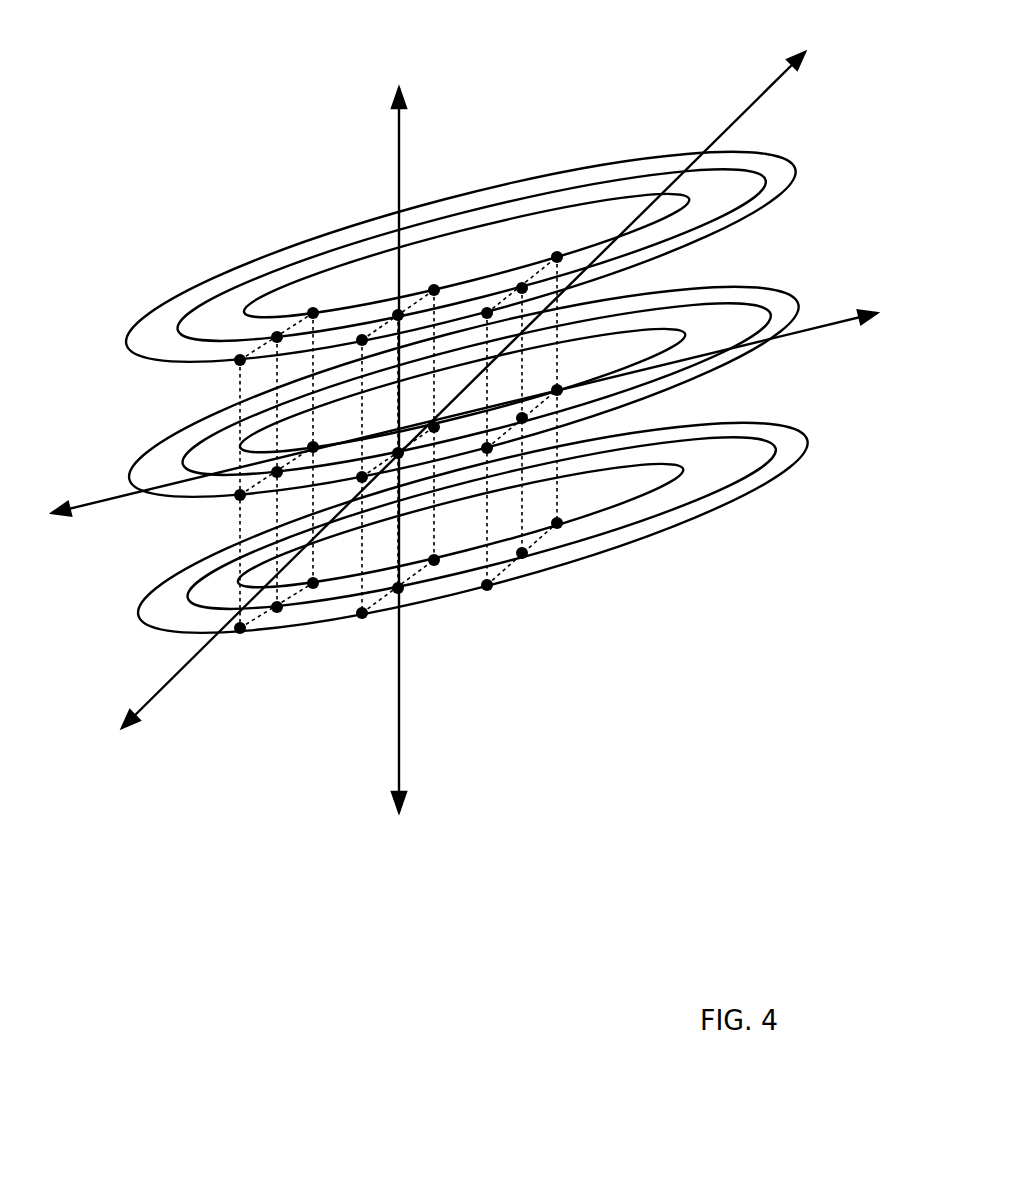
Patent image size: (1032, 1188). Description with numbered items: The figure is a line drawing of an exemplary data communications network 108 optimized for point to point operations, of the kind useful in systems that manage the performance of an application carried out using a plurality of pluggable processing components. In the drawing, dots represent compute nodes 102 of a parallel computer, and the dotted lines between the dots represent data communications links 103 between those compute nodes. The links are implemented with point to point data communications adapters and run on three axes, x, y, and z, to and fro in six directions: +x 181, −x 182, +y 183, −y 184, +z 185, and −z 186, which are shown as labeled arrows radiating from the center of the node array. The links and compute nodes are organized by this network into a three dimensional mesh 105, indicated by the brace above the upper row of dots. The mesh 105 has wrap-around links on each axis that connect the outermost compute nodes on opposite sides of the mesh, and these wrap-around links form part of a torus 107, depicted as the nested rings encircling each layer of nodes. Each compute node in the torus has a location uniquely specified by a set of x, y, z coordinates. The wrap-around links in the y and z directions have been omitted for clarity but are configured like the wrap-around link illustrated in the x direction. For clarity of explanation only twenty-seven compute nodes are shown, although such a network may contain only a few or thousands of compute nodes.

The compute nodes 102 is at (557, 527).
The data communications links 103 is at (243, 529).
The three dimensional mesh 105 is at (313, 313).
The torus 107 is at (230, 268).
The data communications network 108 is at (300, 873).
The +x direction 181 is at (915, 348).
The −x direction 182 is at (50, 560).
The +y direction 183 is at (852, 80).
The −y direction 184 is at (116, 780).
The +z direction 185 is at (418, 80).
The −z direction 186 is at (420, 878).